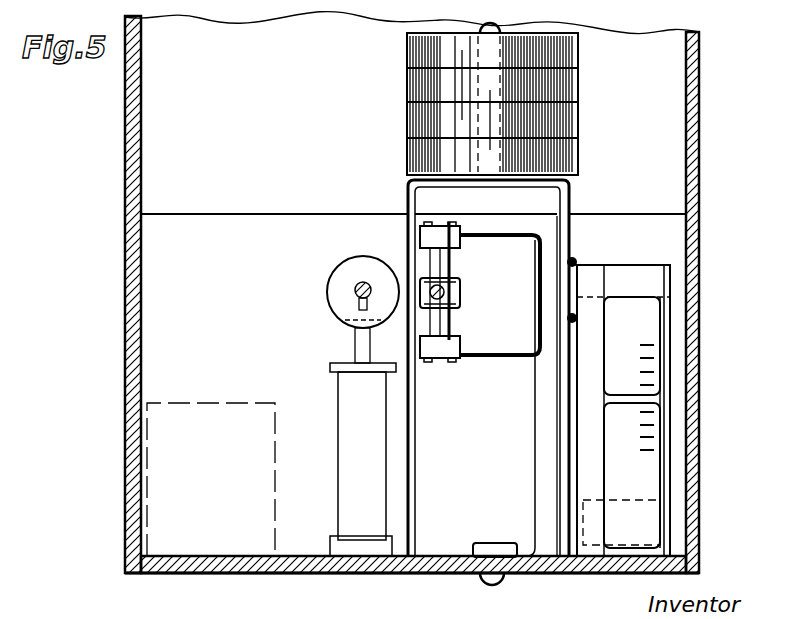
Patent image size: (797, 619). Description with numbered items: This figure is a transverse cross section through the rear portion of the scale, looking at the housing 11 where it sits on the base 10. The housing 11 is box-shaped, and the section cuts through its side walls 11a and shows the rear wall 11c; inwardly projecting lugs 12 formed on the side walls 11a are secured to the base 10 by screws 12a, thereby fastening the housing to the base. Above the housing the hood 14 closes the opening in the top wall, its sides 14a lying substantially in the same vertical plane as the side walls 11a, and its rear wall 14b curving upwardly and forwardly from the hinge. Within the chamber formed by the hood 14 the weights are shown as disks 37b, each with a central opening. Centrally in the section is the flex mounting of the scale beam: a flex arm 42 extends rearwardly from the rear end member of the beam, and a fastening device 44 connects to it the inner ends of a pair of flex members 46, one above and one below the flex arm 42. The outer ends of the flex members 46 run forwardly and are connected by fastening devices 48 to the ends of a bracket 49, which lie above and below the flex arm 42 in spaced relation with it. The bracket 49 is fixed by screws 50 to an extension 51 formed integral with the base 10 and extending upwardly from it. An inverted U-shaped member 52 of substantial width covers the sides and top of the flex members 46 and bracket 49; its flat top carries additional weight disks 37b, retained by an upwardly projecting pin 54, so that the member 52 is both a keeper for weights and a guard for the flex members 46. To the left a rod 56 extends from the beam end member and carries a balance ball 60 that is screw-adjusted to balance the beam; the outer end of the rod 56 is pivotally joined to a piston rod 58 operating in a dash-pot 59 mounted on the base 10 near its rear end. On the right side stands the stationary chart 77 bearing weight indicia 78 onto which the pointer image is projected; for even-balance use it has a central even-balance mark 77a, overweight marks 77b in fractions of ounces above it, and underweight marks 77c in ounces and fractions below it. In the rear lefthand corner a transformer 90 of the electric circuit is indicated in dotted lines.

The base 10 is at (260, 575).
The housing 11 is at (402, 315).
The side walls 11a is at (125, 320).
The rear wall 11c is at (148, 420).
The lugs 12 is at (487, 543).
The screws 12a is at (496, 588).
The hood 14 is at (403, 294).
The sides of the hood 14a is at (125, 143).
The rear wall of the hood 14b is at (431, 104).
The weight disks 37b is at (418, 160).
The flex arm 42 is at (453, 293).
The fastening device 44 is at (450, 273).
The flex members 46 is at (435, 258).
The fastening devices 48 is at (443, 225).
The bracket 49 is at (540, 240).
The screws 50 is at (575, 300).
The extension 51 is at (535, 418).
The inverted U-shaped member 52 is at (408, 193).
The pin 54 is at (497, 38).
The rod 56 is at (353, 292).
The piston rod 58 is at (363, 345).
The dash-pot 59 is at (350, 453).
The balance ball 60 is at (330, 292).
The chart 77 is at (628, 395).
The even-balance mark 77a is at (660, 393).
The overweight marks 77b is at (655, 367).
The underweight marks 77c is at (655, 450).
The weight indicia 78 is at (612, 385).
The transformer 90 is at (193, 538).